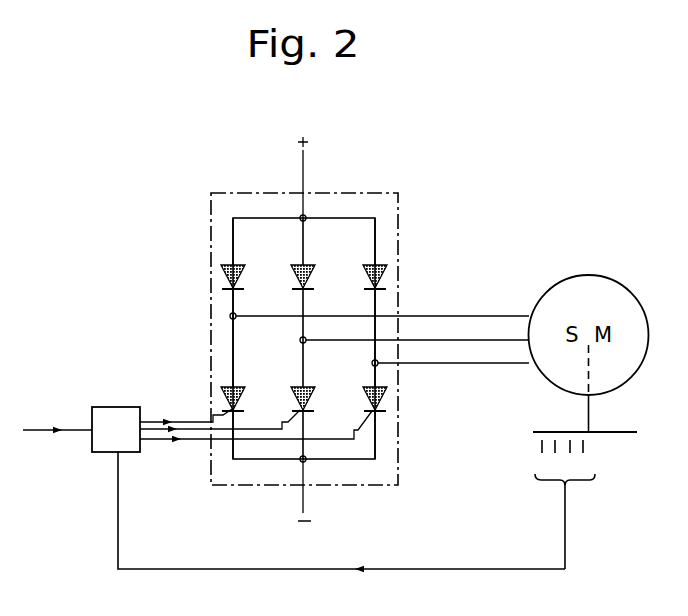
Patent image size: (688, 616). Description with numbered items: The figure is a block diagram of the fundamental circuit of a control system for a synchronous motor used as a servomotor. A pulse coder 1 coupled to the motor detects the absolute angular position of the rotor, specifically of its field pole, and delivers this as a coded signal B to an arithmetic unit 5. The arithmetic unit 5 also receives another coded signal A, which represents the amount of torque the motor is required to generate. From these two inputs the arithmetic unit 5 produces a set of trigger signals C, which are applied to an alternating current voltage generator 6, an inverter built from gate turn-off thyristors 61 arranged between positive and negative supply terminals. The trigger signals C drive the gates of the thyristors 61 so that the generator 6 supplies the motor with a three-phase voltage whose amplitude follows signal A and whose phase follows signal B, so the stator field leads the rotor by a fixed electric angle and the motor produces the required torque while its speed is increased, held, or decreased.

The pulse coder 1 is at (629, 433).
The arithmetic unit 5 is at (117, 407).
The alternating current voltage generator 6 is at (399, 200).
The gate turn-off thyristor 61 is at (221, 278).
The coded signal A is at (40, 430).
The coded signal B is at (440, 569).
The trigger signals C is at (178, 421).